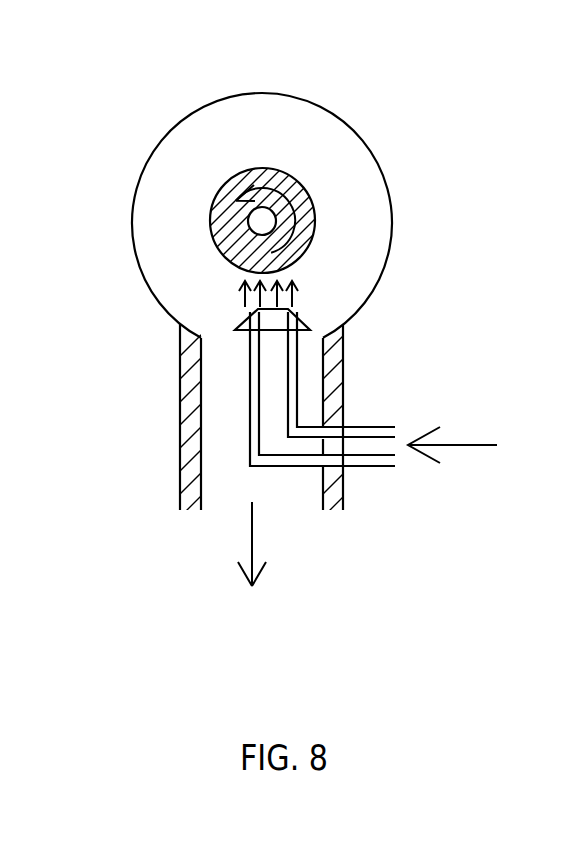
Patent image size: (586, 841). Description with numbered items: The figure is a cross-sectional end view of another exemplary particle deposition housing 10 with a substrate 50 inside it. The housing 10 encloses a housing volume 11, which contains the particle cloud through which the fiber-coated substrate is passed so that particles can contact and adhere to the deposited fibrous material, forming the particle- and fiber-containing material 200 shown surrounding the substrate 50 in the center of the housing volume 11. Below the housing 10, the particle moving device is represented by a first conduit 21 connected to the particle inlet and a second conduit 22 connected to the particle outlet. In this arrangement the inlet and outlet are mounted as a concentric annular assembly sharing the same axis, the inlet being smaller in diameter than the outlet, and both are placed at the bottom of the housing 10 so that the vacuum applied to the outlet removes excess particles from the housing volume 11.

The particle deposition housing 10 is at (330, 110).
The housing volume 11 is at (347, 260).
The substrate 50 is at (252, 223).
The particle- and fiber-containing material 200 is at (232, 247).
The first conduit 21 is at (370, 468).
The second conduit 22 is at (179, 441).